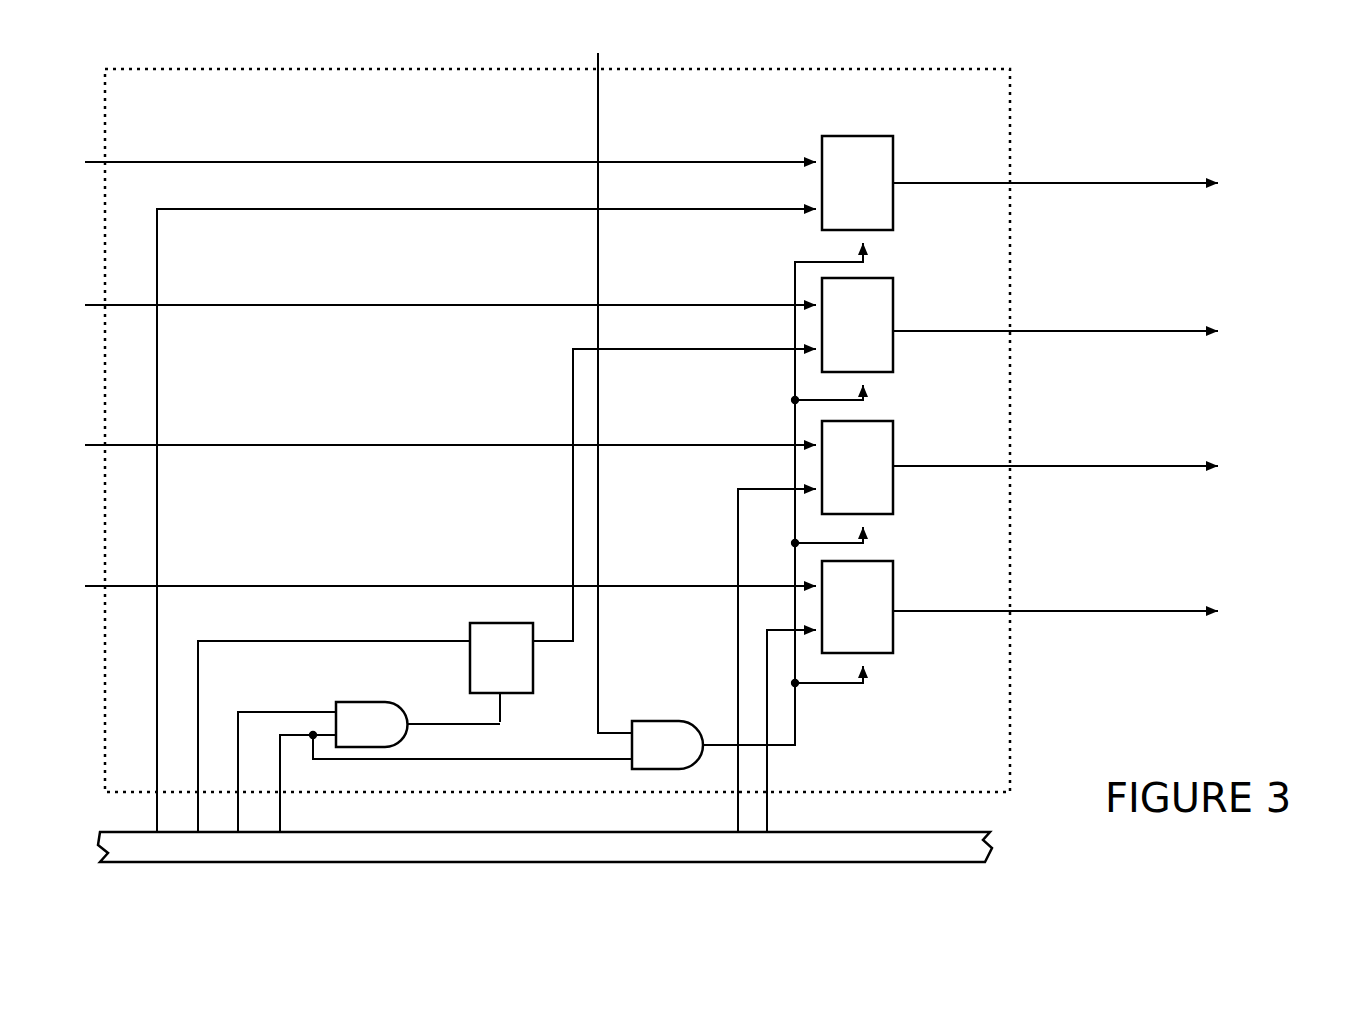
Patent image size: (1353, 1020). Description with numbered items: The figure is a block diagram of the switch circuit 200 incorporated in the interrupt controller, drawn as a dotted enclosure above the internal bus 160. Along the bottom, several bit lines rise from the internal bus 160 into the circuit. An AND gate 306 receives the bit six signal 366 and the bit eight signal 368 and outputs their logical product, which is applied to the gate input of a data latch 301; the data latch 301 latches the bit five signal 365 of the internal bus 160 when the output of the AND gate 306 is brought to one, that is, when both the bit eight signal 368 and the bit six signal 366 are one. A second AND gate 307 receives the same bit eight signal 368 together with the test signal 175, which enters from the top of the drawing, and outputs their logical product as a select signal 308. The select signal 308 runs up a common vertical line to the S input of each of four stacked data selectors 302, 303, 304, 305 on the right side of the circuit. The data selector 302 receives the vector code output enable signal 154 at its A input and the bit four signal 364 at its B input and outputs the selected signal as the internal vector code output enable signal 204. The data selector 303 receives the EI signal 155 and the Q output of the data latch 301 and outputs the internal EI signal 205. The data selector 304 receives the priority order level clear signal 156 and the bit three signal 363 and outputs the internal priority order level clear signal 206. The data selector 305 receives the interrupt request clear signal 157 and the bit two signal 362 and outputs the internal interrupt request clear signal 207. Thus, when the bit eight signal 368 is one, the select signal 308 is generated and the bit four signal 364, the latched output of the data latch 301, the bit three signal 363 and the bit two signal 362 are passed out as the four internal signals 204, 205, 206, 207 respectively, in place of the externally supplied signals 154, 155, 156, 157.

The vector code output enable signal 154 is at (322, 152).
The EI signal 155 is at (385, 305).
The priority order level clear signal 156 is at (390, 445).
The interrupt request clear signal 157 is at (455, 560).
The internal bus 160 is at (632, 827).
The test signal 175 is at (598, 283).
The switch circuit 200 is at (1010, 657).
The internal vector code output enable signal 204 is at (1100, 183).
The internal EI signal 205 is at (1090, 331).
The internal priority order level clear signal 206 is at (1100, 466).
The internal interrupt request clear signal 207 is at (1230, 572).
The data latch 301 is at (447, 630).
The data selector 302 is at (842, 136).
The data selector 303 is at (842, 278).
The data selector 304 is at (842, 421).
The data selector 305 is at (893, 620).
The AND gate 306 is at (405, 732).
The AND gate 307 is at (660, 721).
The select signal 308 is at (795, 705).
The bit "2" signal 362 is at (767, 762).
The bit "3" signal 363 is at (738, 800).
The bit "4" signal 364 is at (157, 622).
The bit "5" signal 365 is at (198, 660).
The bit "6" signal 366 is at (238, 808).
The bit "8" signal 368 is at (360, 760).